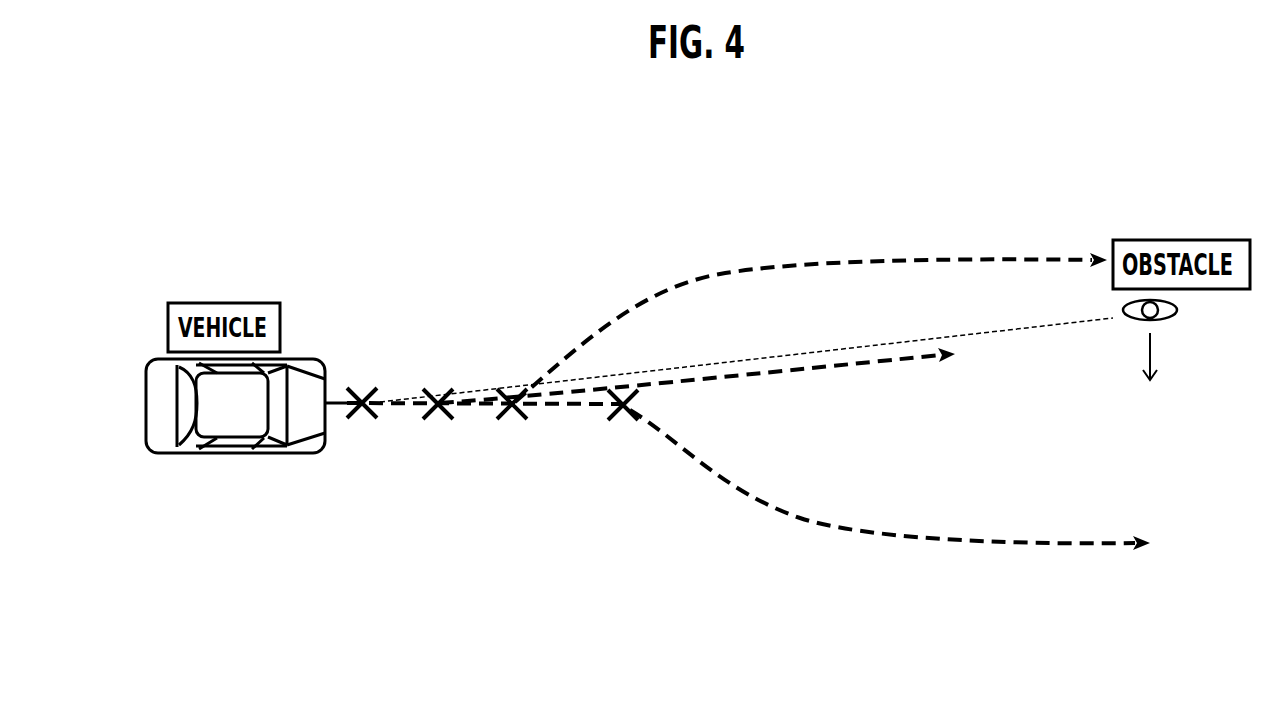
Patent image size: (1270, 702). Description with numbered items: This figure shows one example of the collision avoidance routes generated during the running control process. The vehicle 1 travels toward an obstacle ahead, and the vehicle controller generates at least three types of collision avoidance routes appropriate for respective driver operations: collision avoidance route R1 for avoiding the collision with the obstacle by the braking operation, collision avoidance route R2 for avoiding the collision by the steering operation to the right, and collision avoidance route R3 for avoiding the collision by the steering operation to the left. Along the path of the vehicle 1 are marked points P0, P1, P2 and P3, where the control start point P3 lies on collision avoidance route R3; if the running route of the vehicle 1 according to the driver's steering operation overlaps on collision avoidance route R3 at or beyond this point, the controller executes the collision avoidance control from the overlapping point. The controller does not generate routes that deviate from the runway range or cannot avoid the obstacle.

The vehicle 1 is at (235, 453).
The current position point P0 is at (362, 427).
The route branch point P1 is at (438, 428).
The route branch point P2 is at (623, 428).
The control start point P3 is at (512, 428).
The collision avoidance route R1 is at (877, 368).
The collision avoidance route R2 is at (870, 537).
The collision avoidance route R3 is at (853, 268).